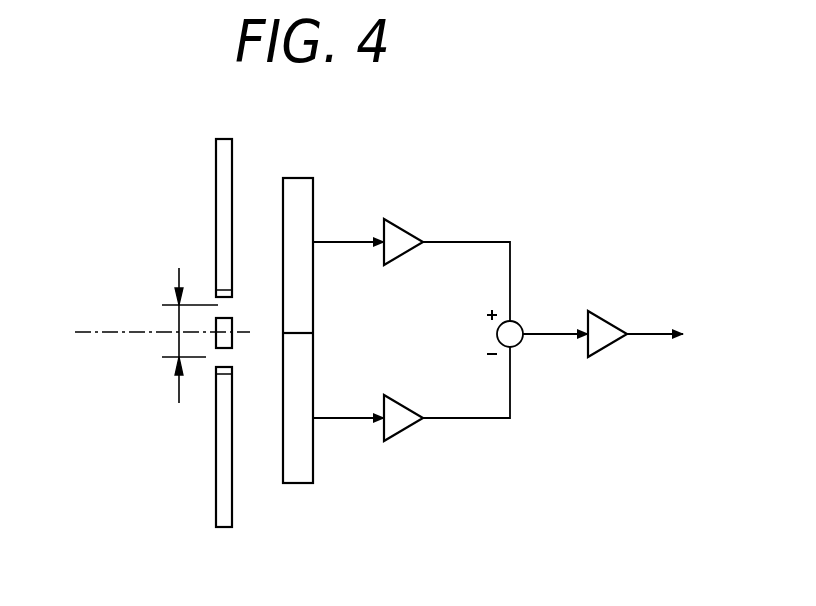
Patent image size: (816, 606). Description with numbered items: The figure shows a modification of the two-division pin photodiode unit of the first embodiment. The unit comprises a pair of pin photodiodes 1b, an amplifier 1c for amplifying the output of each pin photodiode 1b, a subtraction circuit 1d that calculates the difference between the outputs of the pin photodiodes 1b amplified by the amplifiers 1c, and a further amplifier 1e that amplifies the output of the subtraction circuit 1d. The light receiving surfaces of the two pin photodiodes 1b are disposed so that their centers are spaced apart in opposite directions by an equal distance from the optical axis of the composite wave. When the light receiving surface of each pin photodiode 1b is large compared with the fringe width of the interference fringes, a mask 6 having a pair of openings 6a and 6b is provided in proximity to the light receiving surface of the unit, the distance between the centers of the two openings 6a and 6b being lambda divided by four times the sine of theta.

The mask 6 is at (227, 152).
The opening 6a is at (220, 303).
The opening 6b is at (215, 365).
The pin photodiode 1b is at (305, 217).
The amplifier 1c is at (403, 232).
The subtraction circuit 1d is at (522, 325).
The amplifier 1e is at (607, 350).